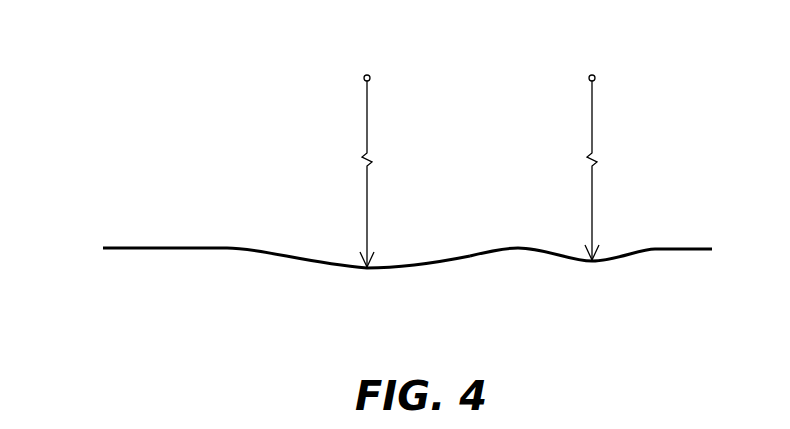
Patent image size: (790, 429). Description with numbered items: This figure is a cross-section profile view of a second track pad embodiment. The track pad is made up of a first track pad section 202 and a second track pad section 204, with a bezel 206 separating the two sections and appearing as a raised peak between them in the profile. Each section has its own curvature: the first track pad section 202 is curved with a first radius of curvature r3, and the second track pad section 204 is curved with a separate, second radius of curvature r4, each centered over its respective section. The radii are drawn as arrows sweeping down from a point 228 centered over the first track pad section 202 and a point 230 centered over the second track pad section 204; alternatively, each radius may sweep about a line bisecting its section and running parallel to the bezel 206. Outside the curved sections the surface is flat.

The first track pad section 202 is at (286, 264).
The second track pad section 204 is at (635, 255).
The bezel 206 is at (518, 247).
The point 228 is at (369, 76).
The point 230 is at (594, 76).
The radius of curvature r3 is at (365, 200).
The radius of curvature r4 is at (594, 199).